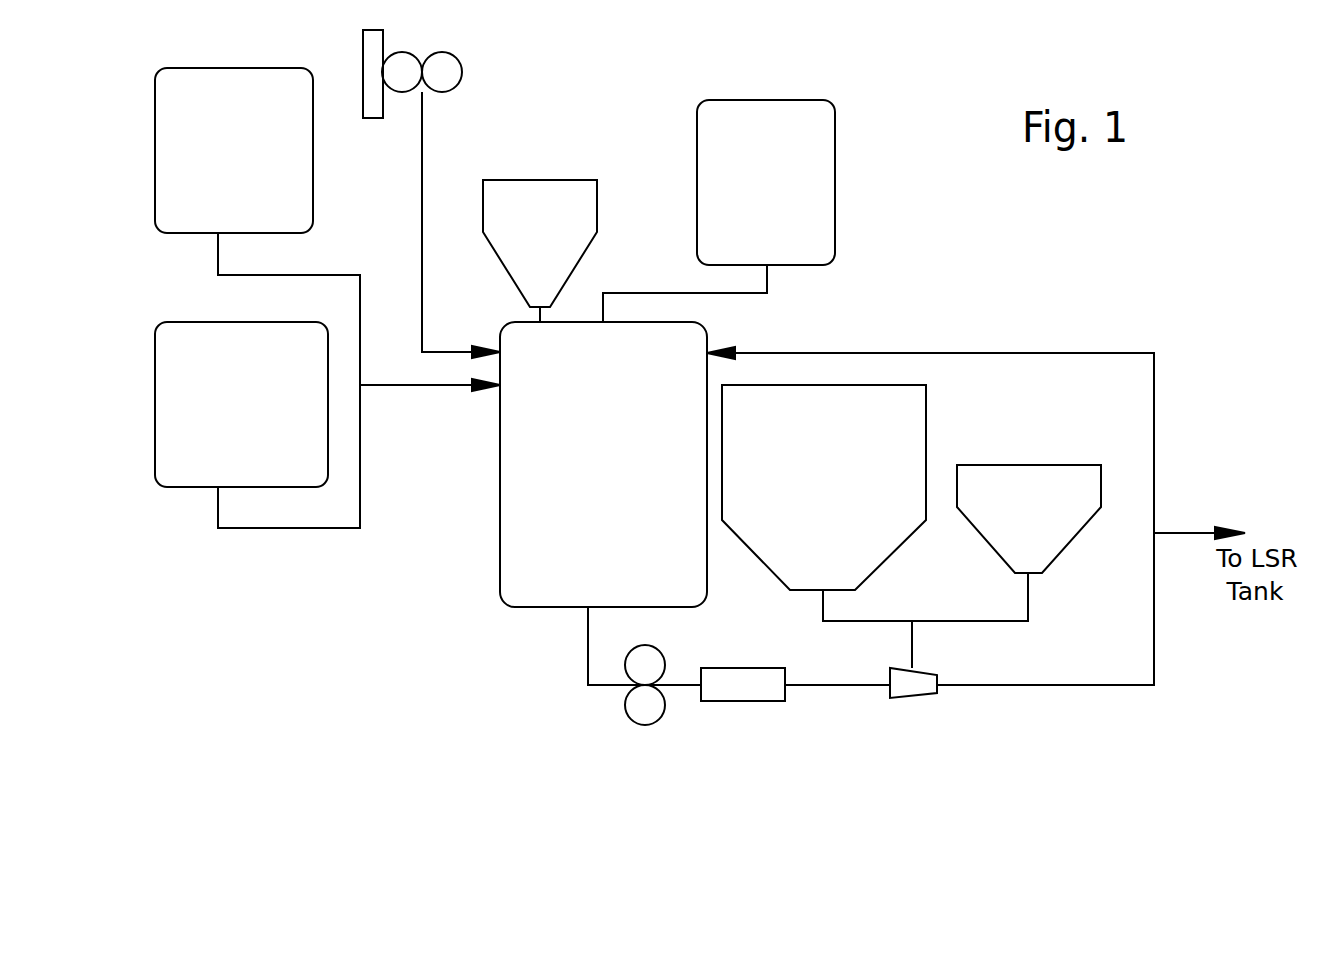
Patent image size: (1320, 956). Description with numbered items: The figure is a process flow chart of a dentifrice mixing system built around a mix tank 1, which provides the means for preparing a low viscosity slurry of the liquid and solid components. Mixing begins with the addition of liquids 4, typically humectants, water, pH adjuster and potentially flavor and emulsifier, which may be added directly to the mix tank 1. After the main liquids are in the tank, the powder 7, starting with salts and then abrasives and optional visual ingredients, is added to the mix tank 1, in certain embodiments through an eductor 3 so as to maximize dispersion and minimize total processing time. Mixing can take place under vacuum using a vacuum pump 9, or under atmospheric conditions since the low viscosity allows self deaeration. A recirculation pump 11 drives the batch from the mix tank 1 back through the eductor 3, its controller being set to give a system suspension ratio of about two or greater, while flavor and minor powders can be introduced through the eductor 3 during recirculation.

The mix tank 1 is at (612, 523).
The eductor 3 is at (898, 698).
The liquids 4 is at (190, 323).
The powder 7 is at (555, 236).
The vacuum pump 9 is at (462, 72).
The recirculation pump 11 is at (633, 690).